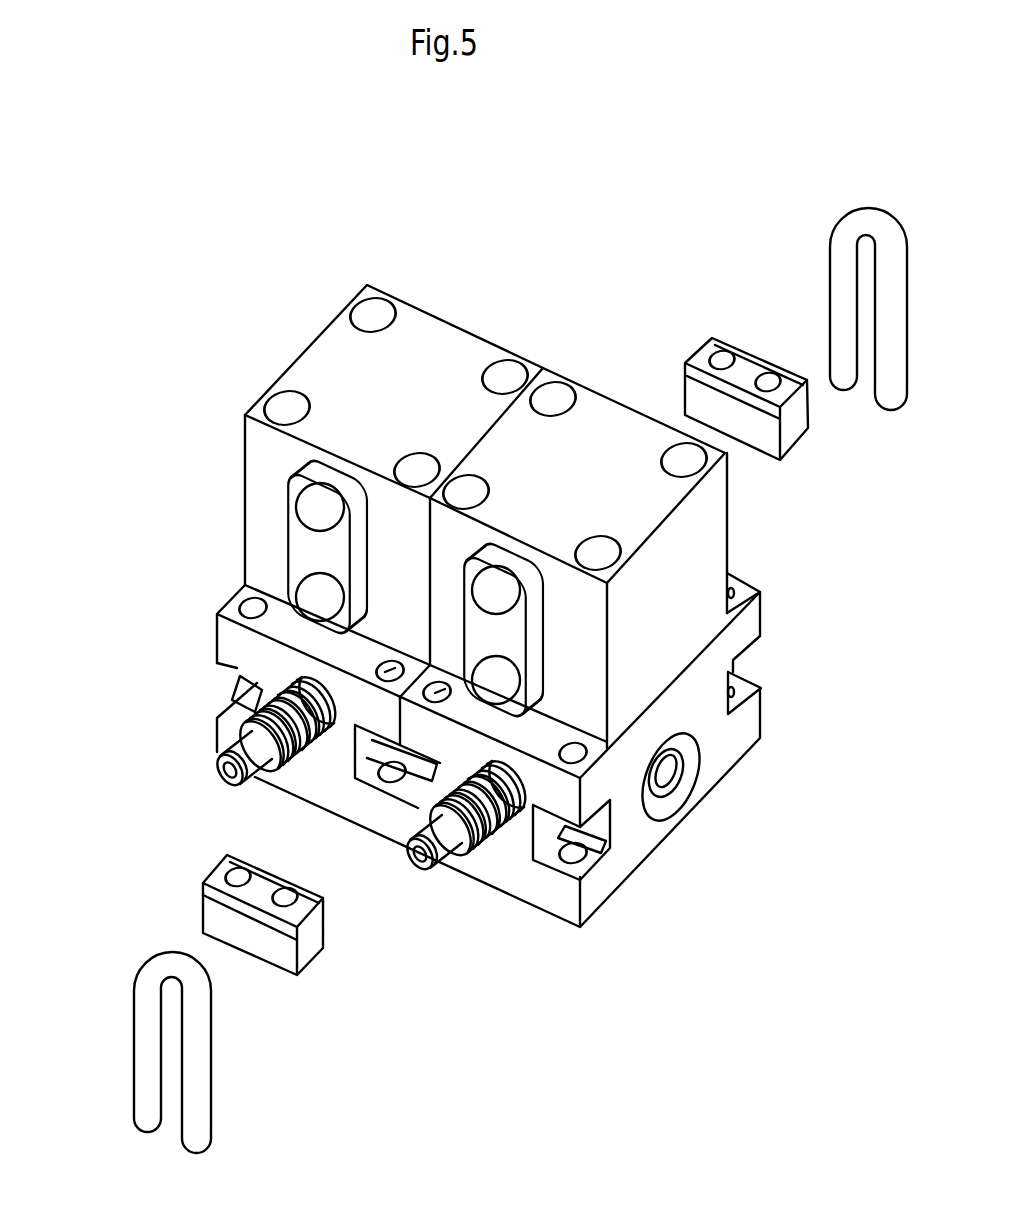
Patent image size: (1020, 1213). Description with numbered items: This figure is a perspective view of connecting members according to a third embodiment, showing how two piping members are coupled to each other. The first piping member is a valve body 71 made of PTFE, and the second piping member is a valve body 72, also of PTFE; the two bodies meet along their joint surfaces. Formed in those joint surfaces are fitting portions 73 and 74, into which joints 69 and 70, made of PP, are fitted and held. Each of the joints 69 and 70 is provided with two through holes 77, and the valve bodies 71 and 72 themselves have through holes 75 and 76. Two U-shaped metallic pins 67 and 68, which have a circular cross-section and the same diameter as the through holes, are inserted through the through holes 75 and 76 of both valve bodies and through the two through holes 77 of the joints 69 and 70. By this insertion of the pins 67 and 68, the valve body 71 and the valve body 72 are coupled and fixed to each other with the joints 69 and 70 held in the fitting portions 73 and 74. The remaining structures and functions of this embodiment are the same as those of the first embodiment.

The U-shaped metallic pin 67 is at (147, 1048).
The U-shaped metallic pin 68 is at (840, 288).
The joint 69 is at (192, 901).
The joint 70 is at (793, 427).
The valve body 71 is at (240, 650).
The valve body 72 is at (567, 898).
The fitting portion 73 is at (358, 780).
The fitting portion 74 is at (382, 740).
The through hole 75 is at (503, 740).
The through hole 76 is at (503, 740).
The through hole 77 is at (233, 872).